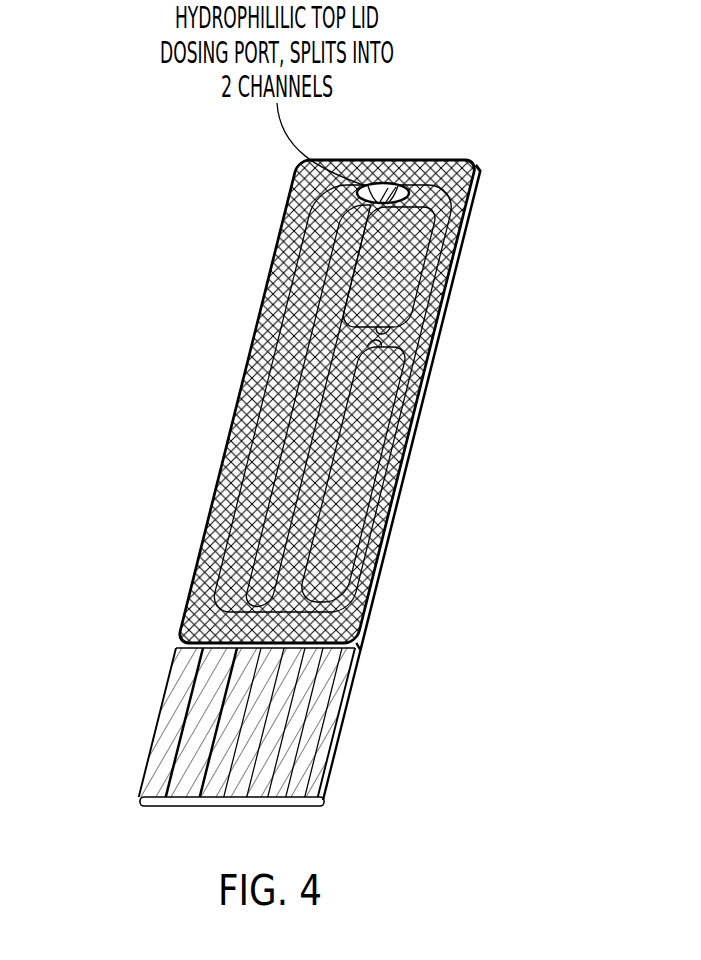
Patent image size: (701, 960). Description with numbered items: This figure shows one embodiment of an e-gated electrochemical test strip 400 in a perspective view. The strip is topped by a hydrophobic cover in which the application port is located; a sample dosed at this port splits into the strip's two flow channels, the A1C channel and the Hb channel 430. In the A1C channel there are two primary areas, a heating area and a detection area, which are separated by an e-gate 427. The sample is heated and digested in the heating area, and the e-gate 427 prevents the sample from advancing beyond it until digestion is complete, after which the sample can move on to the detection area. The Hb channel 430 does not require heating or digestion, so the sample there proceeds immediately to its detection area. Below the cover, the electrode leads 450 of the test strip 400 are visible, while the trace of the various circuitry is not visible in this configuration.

The e-gated test strip 400 is at (215, 378).
The e-gate 427 is at (182, 648).
The Hb channel 430 is at (393, 258).
The electrode leads 450 is at (113, 769).